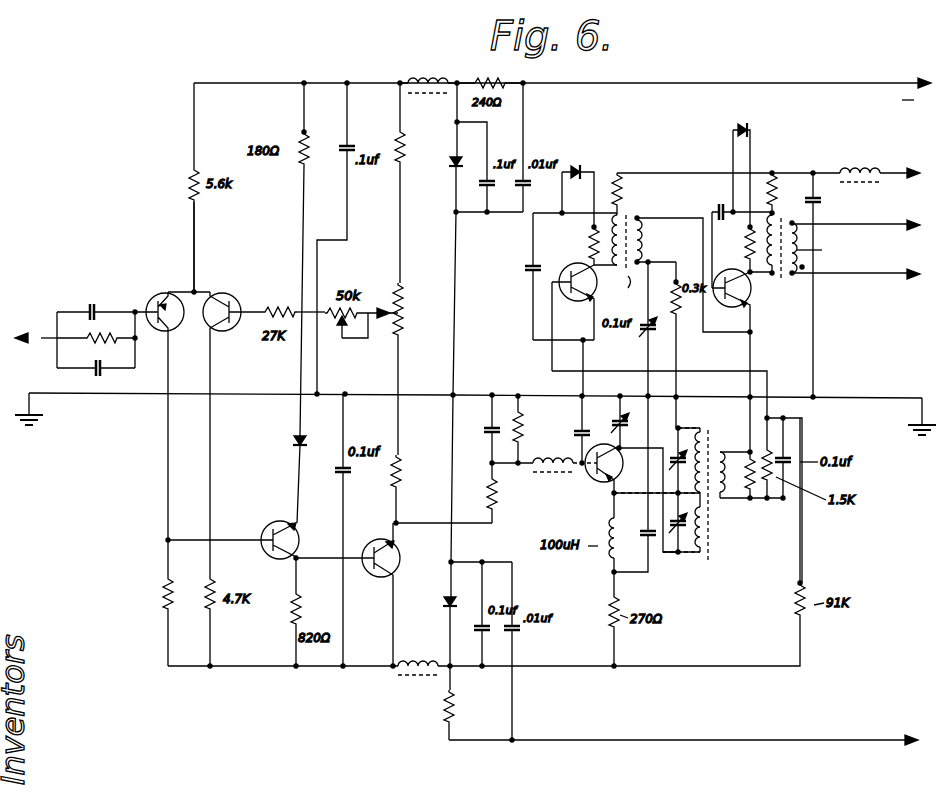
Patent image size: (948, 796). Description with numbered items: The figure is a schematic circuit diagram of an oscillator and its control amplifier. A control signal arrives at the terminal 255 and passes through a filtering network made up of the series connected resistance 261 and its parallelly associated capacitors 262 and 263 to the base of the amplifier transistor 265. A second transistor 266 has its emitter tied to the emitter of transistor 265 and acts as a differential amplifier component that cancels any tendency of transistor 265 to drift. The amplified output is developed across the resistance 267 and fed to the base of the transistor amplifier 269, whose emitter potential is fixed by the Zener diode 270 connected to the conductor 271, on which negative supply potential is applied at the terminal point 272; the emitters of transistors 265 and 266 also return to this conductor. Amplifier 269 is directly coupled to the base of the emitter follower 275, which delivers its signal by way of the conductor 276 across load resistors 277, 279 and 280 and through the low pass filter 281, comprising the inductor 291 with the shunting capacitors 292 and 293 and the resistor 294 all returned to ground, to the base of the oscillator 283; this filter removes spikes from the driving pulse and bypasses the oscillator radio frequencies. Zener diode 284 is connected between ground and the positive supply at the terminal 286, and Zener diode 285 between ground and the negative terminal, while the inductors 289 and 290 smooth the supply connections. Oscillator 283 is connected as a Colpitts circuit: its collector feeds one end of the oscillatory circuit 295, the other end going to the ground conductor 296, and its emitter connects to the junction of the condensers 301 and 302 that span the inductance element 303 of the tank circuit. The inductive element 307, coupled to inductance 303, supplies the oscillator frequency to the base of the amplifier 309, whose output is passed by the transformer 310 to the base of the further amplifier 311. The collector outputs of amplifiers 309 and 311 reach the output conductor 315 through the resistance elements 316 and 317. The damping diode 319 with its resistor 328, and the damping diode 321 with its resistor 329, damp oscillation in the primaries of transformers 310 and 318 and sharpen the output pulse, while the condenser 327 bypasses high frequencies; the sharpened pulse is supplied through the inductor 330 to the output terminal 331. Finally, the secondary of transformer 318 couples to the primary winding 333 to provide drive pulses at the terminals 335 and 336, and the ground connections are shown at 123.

The ground 123 is at (42, 421).
The terminal 255 is at (38, 330).
The series connected resistance 261 is at (168, 286).
The capacitor 262 is at (97, 304).
The capacitor 263 is at (98, 372).
The amplifier transistor 265 is at (175, 262).
The second transistor 266 is at (232, 295).
The resistance 267 is at (160, 598).
The transistor amplifier 269 is at (274, 562).
The Zener diode 270 is at (290, 447).
The conductor 271 is at (244, 85).
The terminal point 272 is at (904, 81).
The amplifier 275 is at (393, 556).
The conductor 276 is at (424, 516).
The load resistor 277 is at (401, 477).
The load resistor 279 is at (402, 324).
The load resistor 280 is at (404, 150).
The low pass filter 281 is at (527, 450).
The oscillator 283 is at (598, 490).
The Zener diode 284 is at (443, 606).
The Zener diode 285 is at (450, 189).
The terminal 286 is at (886, 739).
The inductor 289 is at (424, 682).
The inductor 290 is at (425, 79).
The inductor 291 is at (558, 476).
The shunting capacitor 292 is at (490, 438).
The shunting capacitor 293 is at (579, 424).
The resistor 294 is at (526, 425).
The oscillatory circuit 295 is at (718, 540).
The ground conductor 296 is at (793, 396).
The condenser 301 is at (673, 452).
The condenser 302 is at (693, 566).
The inductance element 303 is at (712, 428).
The inductive element 307 is at (734, 508).
The amplifier 309 is at (565, 323).
The transformer 310 is at (625, 260).
The amplifier 311 is at (762, 299).
The output conductor 315 is at (693, 172).
The resistance element 316 is at (628, 185).
The resistance element 317 is at (783, 182).
The transformer 318 is at (795, 241).
The damping diode 319 is at (584, 169).
The damping diode 321 is at (752, 126).
The condenser 327 is at (717, 207).
The resistor 328 is at (590, 240).
The resistor 329 is at (750, 242).
The inductor 330 is at (872, 170).
The output terminal 331 is at (920, 164).
The primary winding 333 is at (826, 256).
The terminal 335 is at (922, 214).
The terminal 336 is at (922, 265).